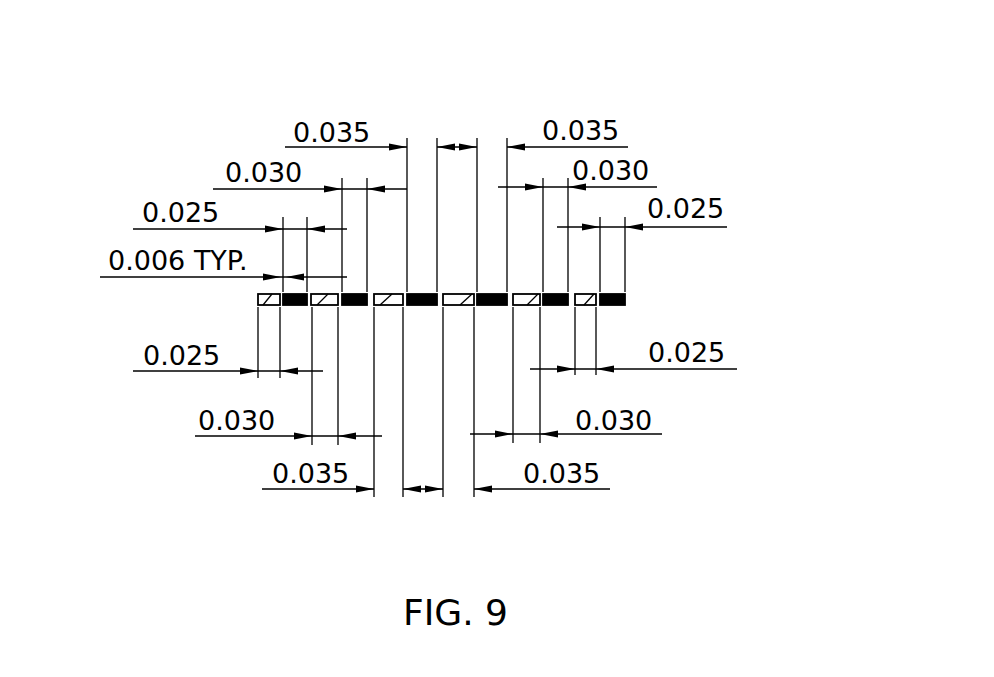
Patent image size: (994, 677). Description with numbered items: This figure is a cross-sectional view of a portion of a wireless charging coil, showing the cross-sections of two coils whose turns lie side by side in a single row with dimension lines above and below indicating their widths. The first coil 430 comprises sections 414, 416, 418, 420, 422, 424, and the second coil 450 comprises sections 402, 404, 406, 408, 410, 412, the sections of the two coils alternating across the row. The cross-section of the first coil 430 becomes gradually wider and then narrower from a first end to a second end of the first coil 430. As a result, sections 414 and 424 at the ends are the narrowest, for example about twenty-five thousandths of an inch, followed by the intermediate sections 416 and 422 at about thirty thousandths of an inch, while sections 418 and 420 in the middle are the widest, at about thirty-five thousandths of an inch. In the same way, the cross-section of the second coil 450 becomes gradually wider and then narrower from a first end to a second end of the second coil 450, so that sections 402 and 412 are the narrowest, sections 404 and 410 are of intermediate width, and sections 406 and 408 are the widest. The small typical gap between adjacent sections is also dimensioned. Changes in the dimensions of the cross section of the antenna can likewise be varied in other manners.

The section of second coil 402 is at (290, 294).
The section of second coil 404 is at (352, 293).
The section of second coil 406 is at (427, 293).
The section of second coil 408 is at (490, 292).
The section of second coil 410 is at (552, 291).
The section of second coil 412 is at (610, 292).
The section of first coil 414 is at (259, 305).
The section of first coil 416 is at (313, 308).
The section of first coil 418 is at (373, 308).
The section of first coil 420 is at (470, 307).
The section of first coil 422 is at (537, 308).
The section of first coil 424 is at (587, 307).
The first coil 430 is at (256, 302).
The second coil 450 is at (632, 297).